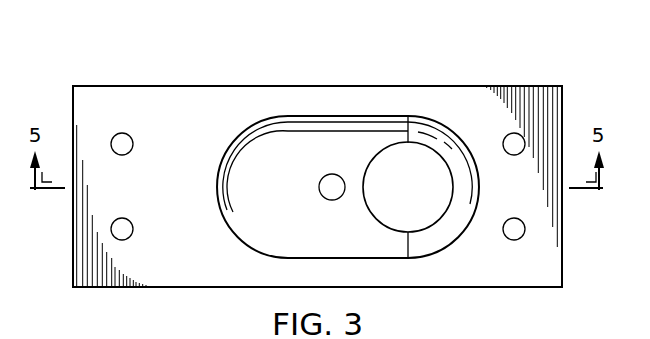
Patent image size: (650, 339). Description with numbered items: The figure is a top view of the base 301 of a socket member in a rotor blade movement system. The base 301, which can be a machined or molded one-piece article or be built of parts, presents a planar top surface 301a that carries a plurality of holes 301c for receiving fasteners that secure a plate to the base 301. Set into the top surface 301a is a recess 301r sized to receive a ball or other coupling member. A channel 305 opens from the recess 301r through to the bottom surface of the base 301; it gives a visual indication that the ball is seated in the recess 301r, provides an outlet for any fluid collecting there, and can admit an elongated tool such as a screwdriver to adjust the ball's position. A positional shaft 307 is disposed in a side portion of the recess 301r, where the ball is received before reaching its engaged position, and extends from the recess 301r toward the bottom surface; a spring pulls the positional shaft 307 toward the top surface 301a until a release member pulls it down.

The base 301 is at (168, 62).
The top surface 301a is at (422, 95).
The recess 301r is at (250, 178).
The holes 301c is at (506, 148).
The channel 305 is at (272, 86).
The positional shaft 307 is at (365, 202).